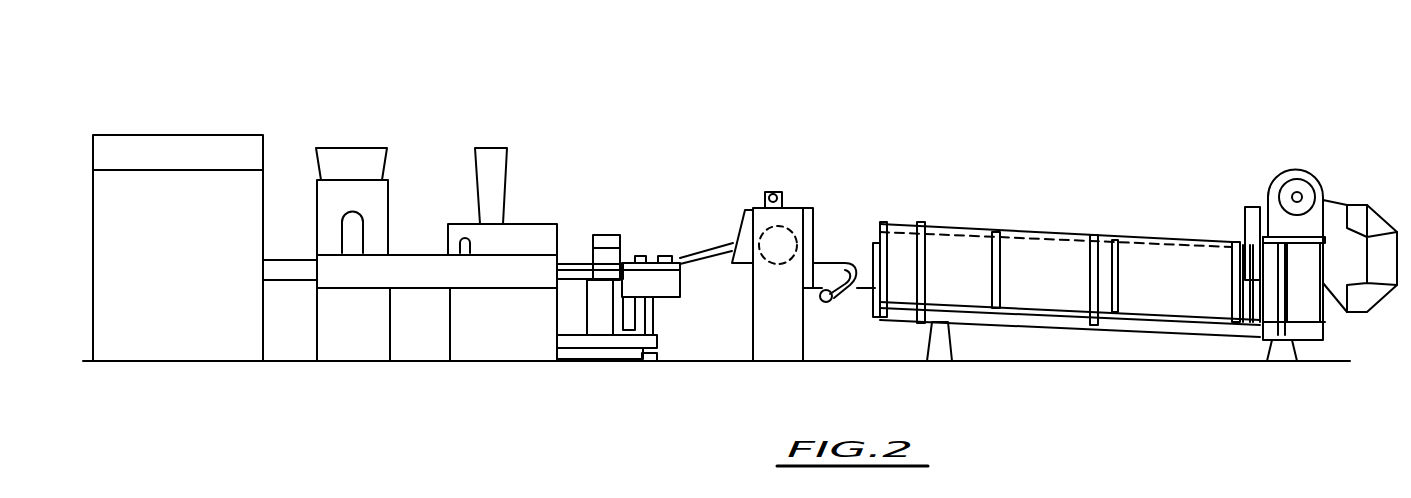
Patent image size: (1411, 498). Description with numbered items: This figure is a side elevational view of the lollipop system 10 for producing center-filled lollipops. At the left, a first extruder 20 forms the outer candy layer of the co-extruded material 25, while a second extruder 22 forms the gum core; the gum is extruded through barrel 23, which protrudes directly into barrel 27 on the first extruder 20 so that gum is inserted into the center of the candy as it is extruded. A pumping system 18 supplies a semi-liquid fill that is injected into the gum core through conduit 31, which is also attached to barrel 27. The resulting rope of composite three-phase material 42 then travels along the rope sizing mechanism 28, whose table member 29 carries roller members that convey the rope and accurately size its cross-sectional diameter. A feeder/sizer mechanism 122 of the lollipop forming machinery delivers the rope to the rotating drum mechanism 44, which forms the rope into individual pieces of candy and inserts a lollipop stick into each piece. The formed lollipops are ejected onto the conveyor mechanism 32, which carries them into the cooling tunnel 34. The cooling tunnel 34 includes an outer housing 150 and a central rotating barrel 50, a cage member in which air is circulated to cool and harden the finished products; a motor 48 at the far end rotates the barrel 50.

The lollipop system 10 is at (191, 45).
The pumping system 18 is at (503, 162).
The first extruder 20 is at (170, 178).
The second extruder 22 is at (383, 187).
The barrel 23 is at (358, 230).
The co-extruded material 25 is at (567, 264).
The barrel 27 is at (372, 275).
The rope sizing mechanism 28 is at (628, 288).
The table member 29 is at (677, 288).
The conduit 31 is at (457, 242).
The conveyor mechanism 32 is at (855, 290).
The cooling tunnel 34 is at (1060, 330).
The rope of composite three-phase material 42 is at (647, 260).
The rotating drum mechanism 44 is at (780, 225).
The motor 48 is at (1252, 207).
The rotating barrel 50 is at (950, 232).
The feeder/sizer mechanism 122 is at (737, 218).
The outer housing 150 is at (1152, 237).